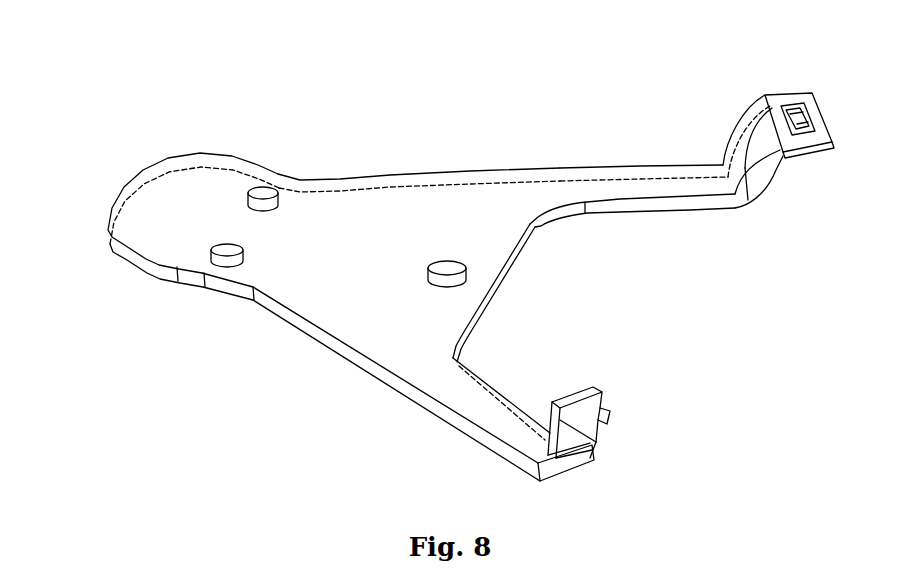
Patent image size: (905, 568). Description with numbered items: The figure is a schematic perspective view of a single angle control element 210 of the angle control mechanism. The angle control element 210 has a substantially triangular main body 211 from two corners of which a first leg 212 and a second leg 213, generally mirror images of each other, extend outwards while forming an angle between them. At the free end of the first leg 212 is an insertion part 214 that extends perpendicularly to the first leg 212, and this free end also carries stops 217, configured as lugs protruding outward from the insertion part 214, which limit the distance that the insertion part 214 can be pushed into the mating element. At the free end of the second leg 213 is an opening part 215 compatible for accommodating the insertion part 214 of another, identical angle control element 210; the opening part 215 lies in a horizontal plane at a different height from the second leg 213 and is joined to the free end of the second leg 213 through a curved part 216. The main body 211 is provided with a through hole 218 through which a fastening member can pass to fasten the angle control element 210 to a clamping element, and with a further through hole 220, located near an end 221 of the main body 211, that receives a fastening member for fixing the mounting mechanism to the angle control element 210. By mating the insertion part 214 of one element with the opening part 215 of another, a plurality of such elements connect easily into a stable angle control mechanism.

The angle control element 210 is at (445, 255).
The main body 211 is at (478, 218).
The first leg 212 is at (470, 388).
The second leg 213 is at (640, 188).
The insertion part 214 is at (577, 388).
The opening part 215 is at (792, 93).
The curved part 216 is at (766, 172).
The stops 217 is at (612, 418).
The through hole 218 is at (430, 286).
The through hole 220 is at (222, 264).
The end 221 is at (180, 210).